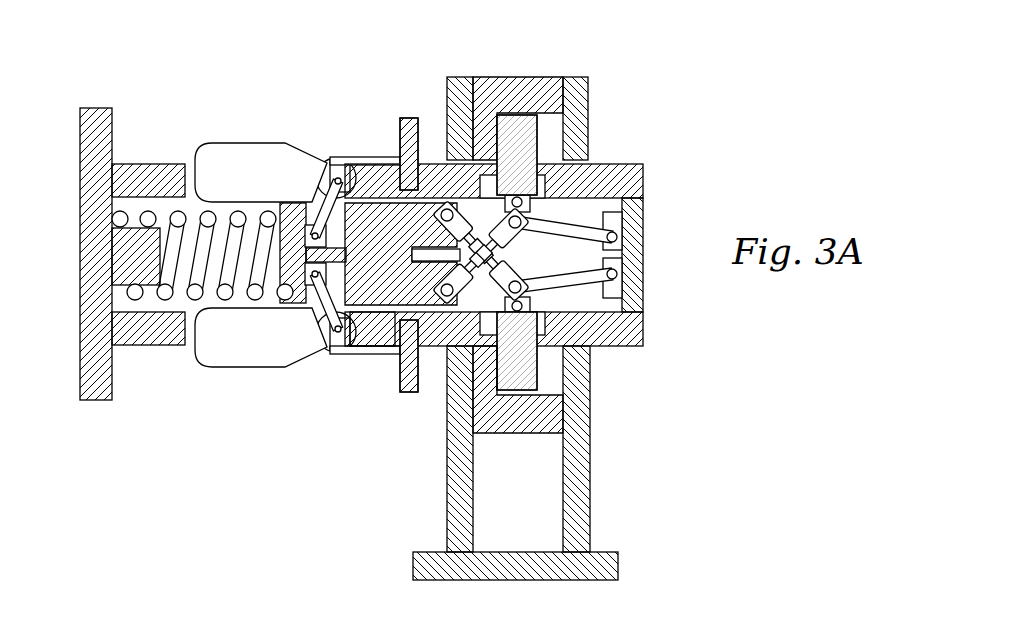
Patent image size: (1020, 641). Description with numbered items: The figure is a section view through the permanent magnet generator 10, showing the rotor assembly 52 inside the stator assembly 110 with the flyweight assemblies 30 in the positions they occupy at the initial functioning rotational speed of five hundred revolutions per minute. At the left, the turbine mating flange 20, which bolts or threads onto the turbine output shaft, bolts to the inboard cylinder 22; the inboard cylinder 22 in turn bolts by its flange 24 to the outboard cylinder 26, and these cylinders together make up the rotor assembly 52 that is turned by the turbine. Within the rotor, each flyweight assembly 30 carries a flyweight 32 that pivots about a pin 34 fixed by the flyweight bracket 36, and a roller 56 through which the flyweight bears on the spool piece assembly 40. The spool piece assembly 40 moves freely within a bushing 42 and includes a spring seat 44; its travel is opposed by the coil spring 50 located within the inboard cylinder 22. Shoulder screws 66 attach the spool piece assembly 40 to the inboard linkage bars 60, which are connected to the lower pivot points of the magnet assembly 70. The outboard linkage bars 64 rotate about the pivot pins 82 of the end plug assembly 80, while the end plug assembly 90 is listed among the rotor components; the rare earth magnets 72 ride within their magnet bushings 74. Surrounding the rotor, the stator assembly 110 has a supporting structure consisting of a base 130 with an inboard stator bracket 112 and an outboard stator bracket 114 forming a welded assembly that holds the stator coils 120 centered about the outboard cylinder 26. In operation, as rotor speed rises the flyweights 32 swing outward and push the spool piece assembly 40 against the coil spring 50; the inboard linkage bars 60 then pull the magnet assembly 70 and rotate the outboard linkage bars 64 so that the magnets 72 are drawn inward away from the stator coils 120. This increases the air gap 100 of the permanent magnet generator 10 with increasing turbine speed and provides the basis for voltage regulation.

The permanent magnet generator 10 is at (708, 130).
The turbine mating flange 20 is at (97, 118).
The inboard cylinder 22 is at (150, 183).
The flange 24 is at (405, 130).
The outboard cylinder 26 is at (640, 172).
The flyweight assembly 30 is at (240, 138).
The flyweight 32 is at (215, 175).
The pin 34 is at (330, 175).
The flyweight bracket 36 is at (355, 164).
The spool piece assembly 40 is at (343, 335).
The bushing 42 is at (372, 352).
The spring seat 44 is at (296, 245).
The coil spring 50 is at (125, 295).
The rotor assembly 52 is at (386, 142).
The roller 56 is at (292, 262).
The inboard linkage bar 60 is at (452, 160).
The outboard linkage bar 64 is at (620, 215).
The shoulder screw 66 is at (442, 208).
The magnet assembly 70 is at (583, 100).
The rare earth magnet 72 is at (518, 190).
The magnet bushing 74 is at (548, 196).
The end plug assembly 80 is at (625, 330).
The pivot pin 82 is at (625, 286).
The end plug assembly 90 is at (625, 245).
The air gap 100 is at (590, 180).
The stator assembly 110 is at (487, 72).
The inboard stator bracket 112 is at (447, 520).
The outboard stator bracket 114 is at (580, 443).
The stator coil 120 is at (521, 146).
The base 130 is at (618, 568).